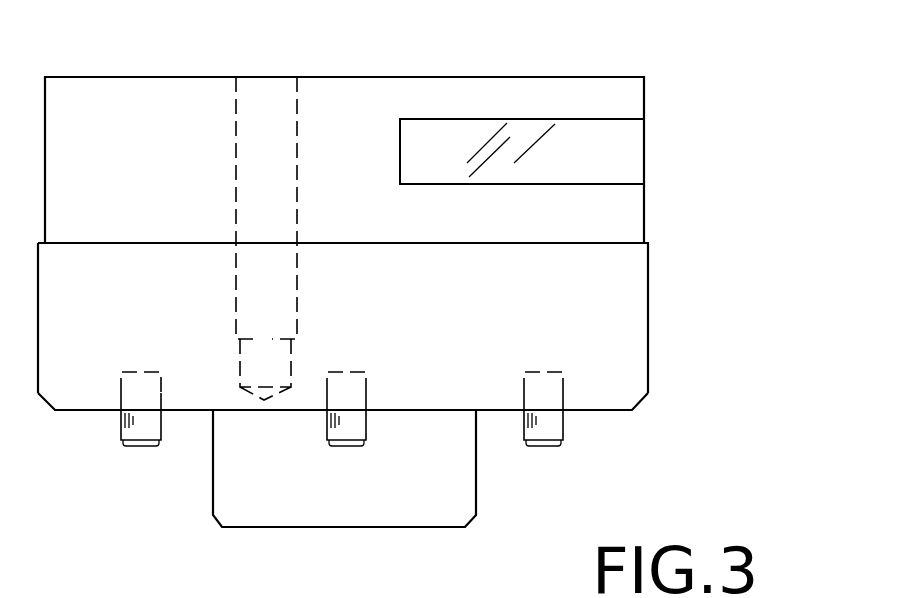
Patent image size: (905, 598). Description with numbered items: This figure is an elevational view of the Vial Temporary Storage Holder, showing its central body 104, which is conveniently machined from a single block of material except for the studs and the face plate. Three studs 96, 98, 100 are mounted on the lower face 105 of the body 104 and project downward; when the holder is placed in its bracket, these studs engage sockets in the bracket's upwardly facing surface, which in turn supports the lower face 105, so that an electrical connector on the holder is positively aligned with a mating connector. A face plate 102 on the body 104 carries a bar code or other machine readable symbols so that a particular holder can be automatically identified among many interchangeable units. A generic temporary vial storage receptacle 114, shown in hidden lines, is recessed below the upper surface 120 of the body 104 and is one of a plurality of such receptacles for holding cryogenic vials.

The stud 96 is at (145, 447).
The stud 98 is at (343, 447).
The stud 100 is at (545, 447).
The face plate 102 is at (620, 162).
The central body 104 is at (683, 277).
The lower face 105 is at (607, 411).
The temporary vial storage receptacle 114 is at (297, 97).
The upper surface 120 is at (575, 76).